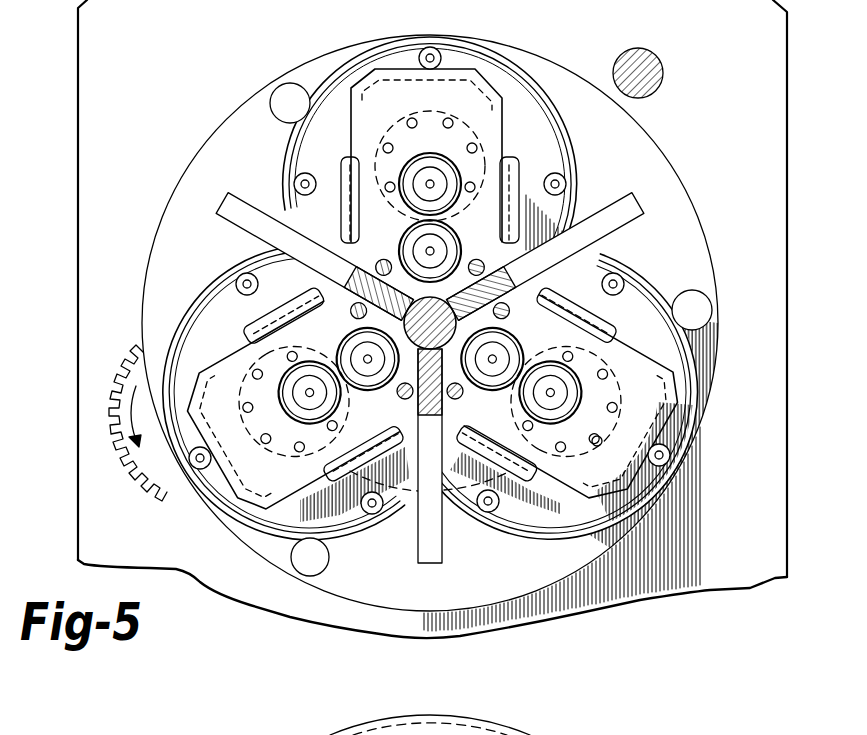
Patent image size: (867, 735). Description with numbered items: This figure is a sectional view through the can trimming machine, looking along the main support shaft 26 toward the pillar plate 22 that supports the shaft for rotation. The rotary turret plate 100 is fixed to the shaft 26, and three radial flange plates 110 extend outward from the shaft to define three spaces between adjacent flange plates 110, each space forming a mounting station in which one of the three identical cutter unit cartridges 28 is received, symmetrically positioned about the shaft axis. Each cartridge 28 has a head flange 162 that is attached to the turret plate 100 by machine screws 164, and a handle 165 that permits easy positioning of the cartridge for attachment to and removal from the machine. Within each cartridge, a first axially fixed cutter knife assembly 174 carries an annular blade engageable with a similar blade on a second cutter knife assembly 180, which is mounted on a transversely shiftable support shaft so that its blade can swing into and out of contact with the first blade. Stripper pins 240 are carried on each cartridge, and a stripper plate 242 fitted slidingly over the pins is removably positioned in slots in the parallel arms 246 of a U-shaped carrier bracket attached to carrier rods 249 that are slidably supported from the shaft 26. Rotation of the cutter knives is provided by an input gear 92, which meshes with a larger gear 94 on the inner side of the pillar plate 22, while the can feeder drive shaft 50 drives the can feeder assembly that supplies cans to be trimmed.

The pillar plate 22 is at (80, 75).
The main support shaft 26 is at (408, 310).
The cutter unit cartridge 28 is at (580, 130).
The can feeder drive shaft 50 is at (663, 68).
The input gear 92 is at (148, 488).
The larger gear 94 is at (446, 505).
The rotary turret plate 100 is at (680, 190).
The radial flange plate 110 is at (228, 213).
The head flange 162 is at (302, 170).
The machine screw 164 is at (624, 286).
The handle 165 is at (283, 88).
The first axially fixed cutter knife assembly 174 is at (438, 152).
The second cutter knife assembly 180 is at (442, 186).
The stripper pin 240 is at (598, 448).
The stripper plate 242 is at (480, 88).
The parallel arm 246 is at (525, 166).
The carrier rod 249 is at (509, 305).